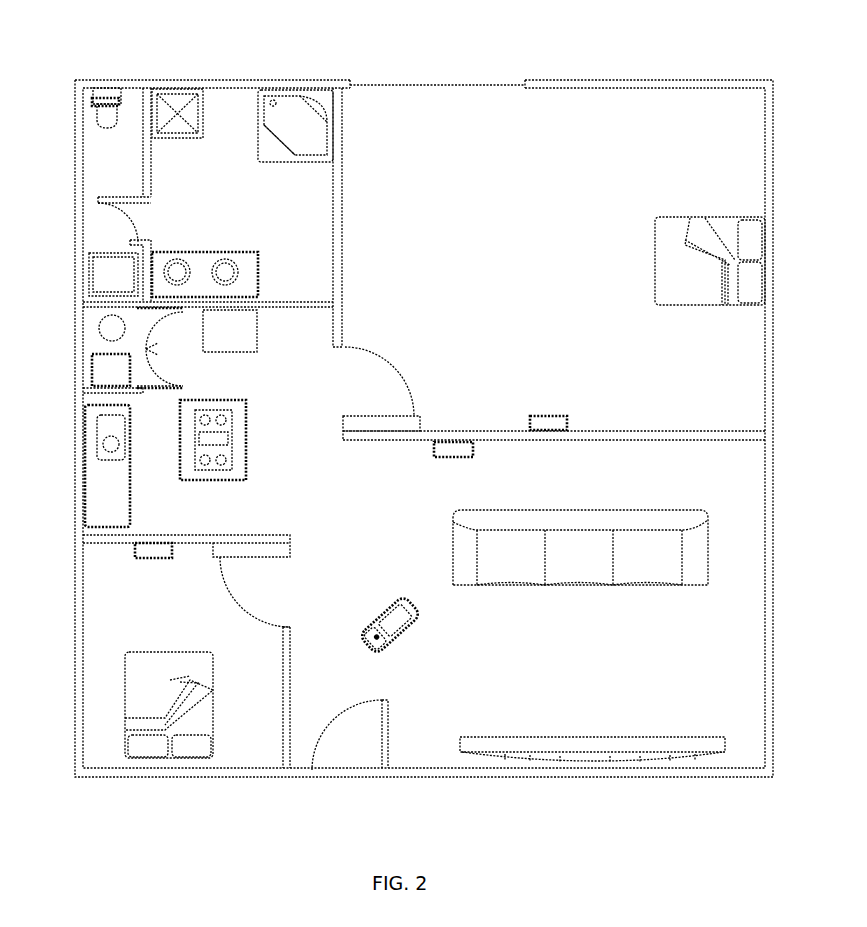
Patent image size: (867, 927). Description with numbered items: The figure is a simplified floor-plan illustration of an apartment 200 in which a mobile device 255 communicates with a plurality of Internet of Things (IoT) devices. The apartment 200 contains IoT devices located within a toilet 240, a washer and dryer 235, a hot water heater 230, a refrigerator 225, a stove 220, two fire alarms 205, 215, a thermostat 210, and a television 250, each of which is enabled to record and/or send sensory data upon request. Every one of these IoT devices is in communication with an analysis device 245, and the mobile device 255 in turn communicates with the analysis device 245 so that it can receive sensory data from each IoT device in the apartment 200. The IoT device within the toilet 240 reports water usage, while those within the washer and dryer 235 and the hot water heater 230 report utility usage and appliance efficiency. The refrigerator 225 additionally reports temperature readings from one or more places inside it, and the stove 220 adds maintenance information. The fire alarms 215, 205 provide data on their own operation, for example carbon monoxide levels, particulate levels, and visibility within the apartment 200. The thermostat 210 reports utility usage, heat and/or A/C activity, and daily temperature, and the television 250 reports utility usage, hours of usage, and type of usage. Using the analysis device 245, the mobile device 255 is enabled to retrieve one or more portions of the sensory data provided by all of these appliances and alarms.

The apartment 200 is at (232, 63).
The fire alarm 205 is at (152, 555).
The thermostat 210 is at (455, 450).
The fire alarm 215 is at (545, 422).
The stove 220 is at (210, 438).
The refrigerator 225 is at (230, 330).
The hot water heater 230 is at (100, 330).
The washer and dryer 235 is at (110, 272).
The toilet 240 is at (105, 108).
The analysis device 245 is at (92, 372).
The television 250 is at (502, 745).
The mobile device 255 is at (380, 620).